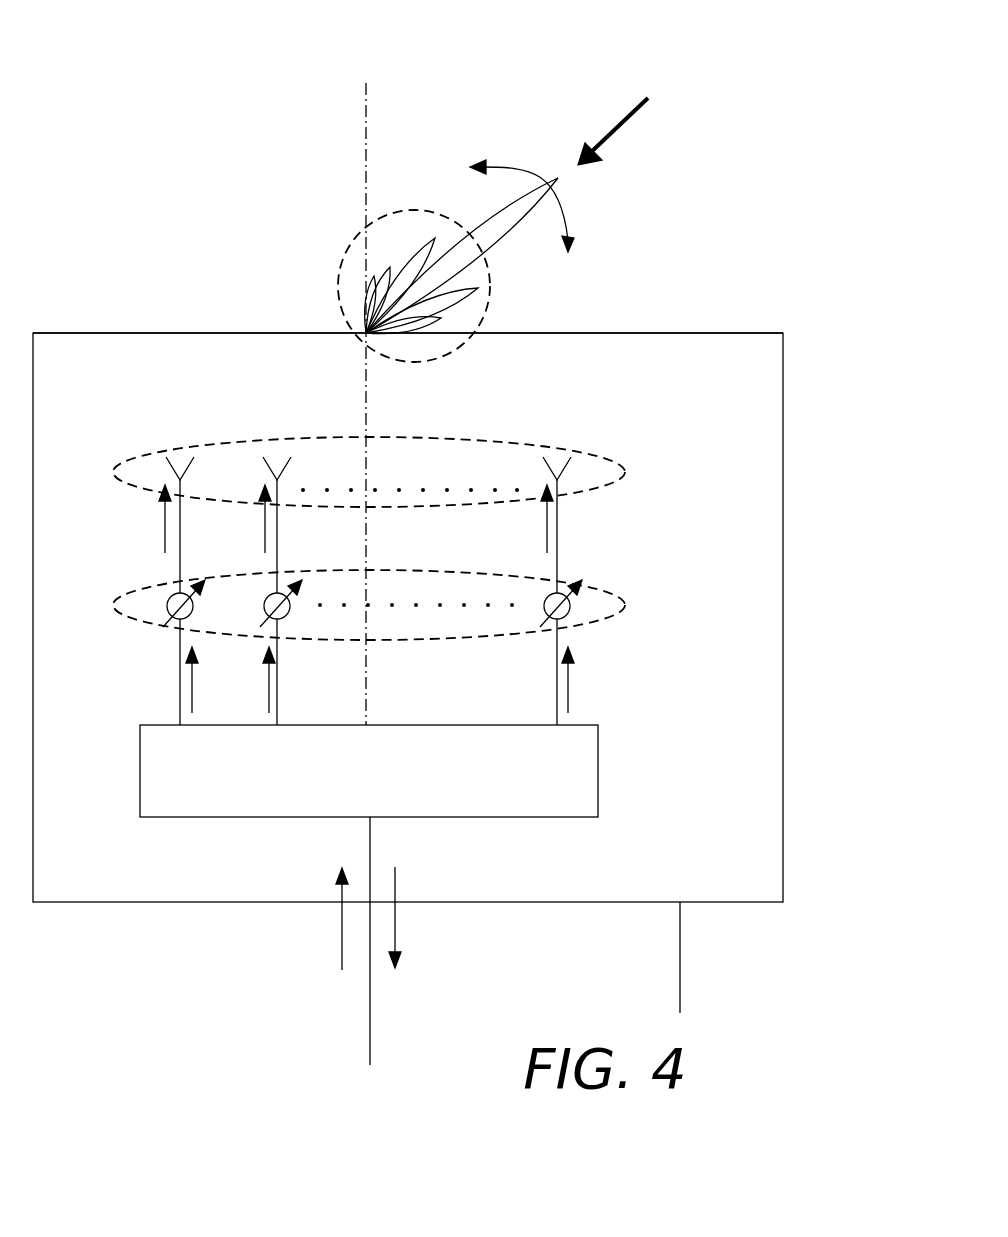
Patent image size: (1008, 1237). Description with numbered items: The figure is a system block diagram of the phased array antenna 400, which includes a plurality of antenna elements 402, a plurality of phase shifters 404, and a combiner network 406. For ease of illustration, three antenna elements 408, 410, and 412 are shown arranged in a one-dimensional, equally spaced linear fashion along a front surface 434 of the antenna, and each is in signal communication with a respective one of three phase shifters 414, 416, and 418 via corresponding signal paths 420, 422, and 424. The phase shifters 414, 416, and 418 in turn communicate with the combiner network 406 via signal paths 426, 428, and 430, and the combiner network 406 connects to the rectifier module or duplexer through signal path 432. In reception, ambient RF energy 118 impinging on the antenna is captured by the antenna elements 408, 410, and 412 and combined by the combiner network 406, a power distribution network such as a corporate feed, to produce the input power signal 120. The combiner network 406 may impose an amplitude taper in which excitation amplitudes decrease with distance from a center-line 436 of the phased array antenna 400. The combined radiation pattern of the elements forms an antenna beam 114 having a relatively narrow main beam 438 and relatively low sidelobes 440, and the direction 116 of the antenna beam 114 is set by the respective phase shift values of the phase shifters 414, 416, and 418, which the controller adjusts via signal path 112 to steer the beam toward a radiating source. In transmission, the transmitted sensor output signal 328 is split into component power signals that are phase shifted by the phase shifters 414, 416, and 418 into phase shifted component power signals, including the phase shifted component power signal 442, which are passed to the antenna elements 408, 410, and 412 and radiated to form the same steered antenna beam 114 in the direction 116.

The signal path 112 is at (680, 962).
The antenna beam 114 is at (477, 247).
The direction 116 is at (489, 188).
The ambient RF energy 118 is at (669, 105).
The input power signal 120 is at (398, 920).
The transmitted sensor output signal 328 is at (338, 918).
The phased array antenna 400 is at (408, 617).
The plurality of antenna elements 402 is at (618, 473).
The plurality of phase shifters 404 is at (620, 613).
The combiner network 406 is at (369, 771).
The antenna element 408 is at (145, 458).
The antenna element 410 is at (265, 470).
The antenna element 412 is at (547, 470).
The phase shifter 414 is at (163, 598).
The phase shifter 416 is at (263, 593).
The phase shifter 418 is at (548, 597).
The signal path 420 is at (180, 563).
The signal path 422 is at (278, 553).
The signal path 424 is at (560, 557).
The signal path 426 is at (180, 690).
The signal path 428 is at (278, 692).
The signal path 430 is at (558, 705).
The signal path 432 is at (193, 687).
The front surface 434 is at (242, 703).
The center-line 436 is at (627, 667).
The main beam 438 is at (88, 485).
The sidelobes 440 is at (265, 533).
The phase shifted component power signal 442 is at (547, 540).